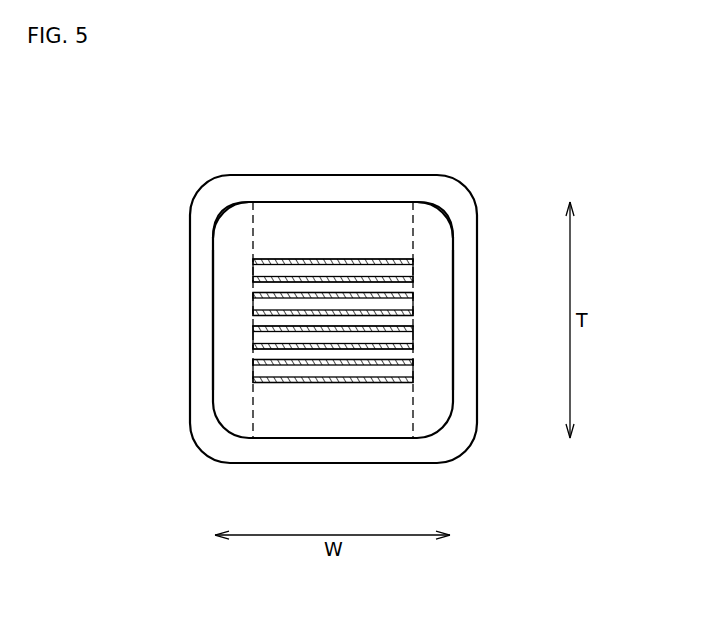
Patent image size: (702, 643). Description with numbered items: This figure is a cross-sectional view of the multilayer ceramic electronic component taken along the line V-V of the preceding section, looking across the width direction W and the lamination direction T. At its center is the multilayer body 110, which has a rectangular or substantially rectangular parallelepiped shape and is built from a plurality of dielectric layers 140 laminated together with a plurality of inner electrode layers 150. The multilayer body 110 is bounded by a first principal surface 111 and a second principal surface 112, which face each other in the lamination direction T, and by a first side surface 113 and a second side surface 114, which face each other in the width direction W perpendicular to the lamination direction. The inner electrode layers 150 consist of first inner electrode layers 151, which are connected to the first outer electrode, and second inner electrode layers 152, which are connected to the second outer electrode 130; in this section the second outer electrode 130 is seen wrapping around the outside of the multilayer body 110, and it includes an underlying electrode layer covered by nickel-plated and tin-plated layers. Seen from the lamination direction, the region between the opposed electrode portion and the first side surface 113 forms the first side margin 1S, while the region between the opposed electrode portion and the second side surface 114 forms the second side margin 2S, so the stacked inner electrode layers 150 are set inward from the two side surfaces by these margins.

The multilayer body 110 is at (337, 95).
The first principal surface 111 is at (388, 202).
The second principal surface 112 is at (386, 440).
The first side surface 113 is at (453, 246).
The second side surface 114 is at (213, 389).
The second outer electrode 130 is at (478, 368).
The dielectric layers 140 is at (260, 222).
The inner electrode layers 150 is at (333, 237).
The first inner electrode layers 151 is at (287, 260).
The second inner electrode layers 152 is at (331, 276).
The first side margin 1S is at (425, 230).
The second side margin 2S is at (237, 230).